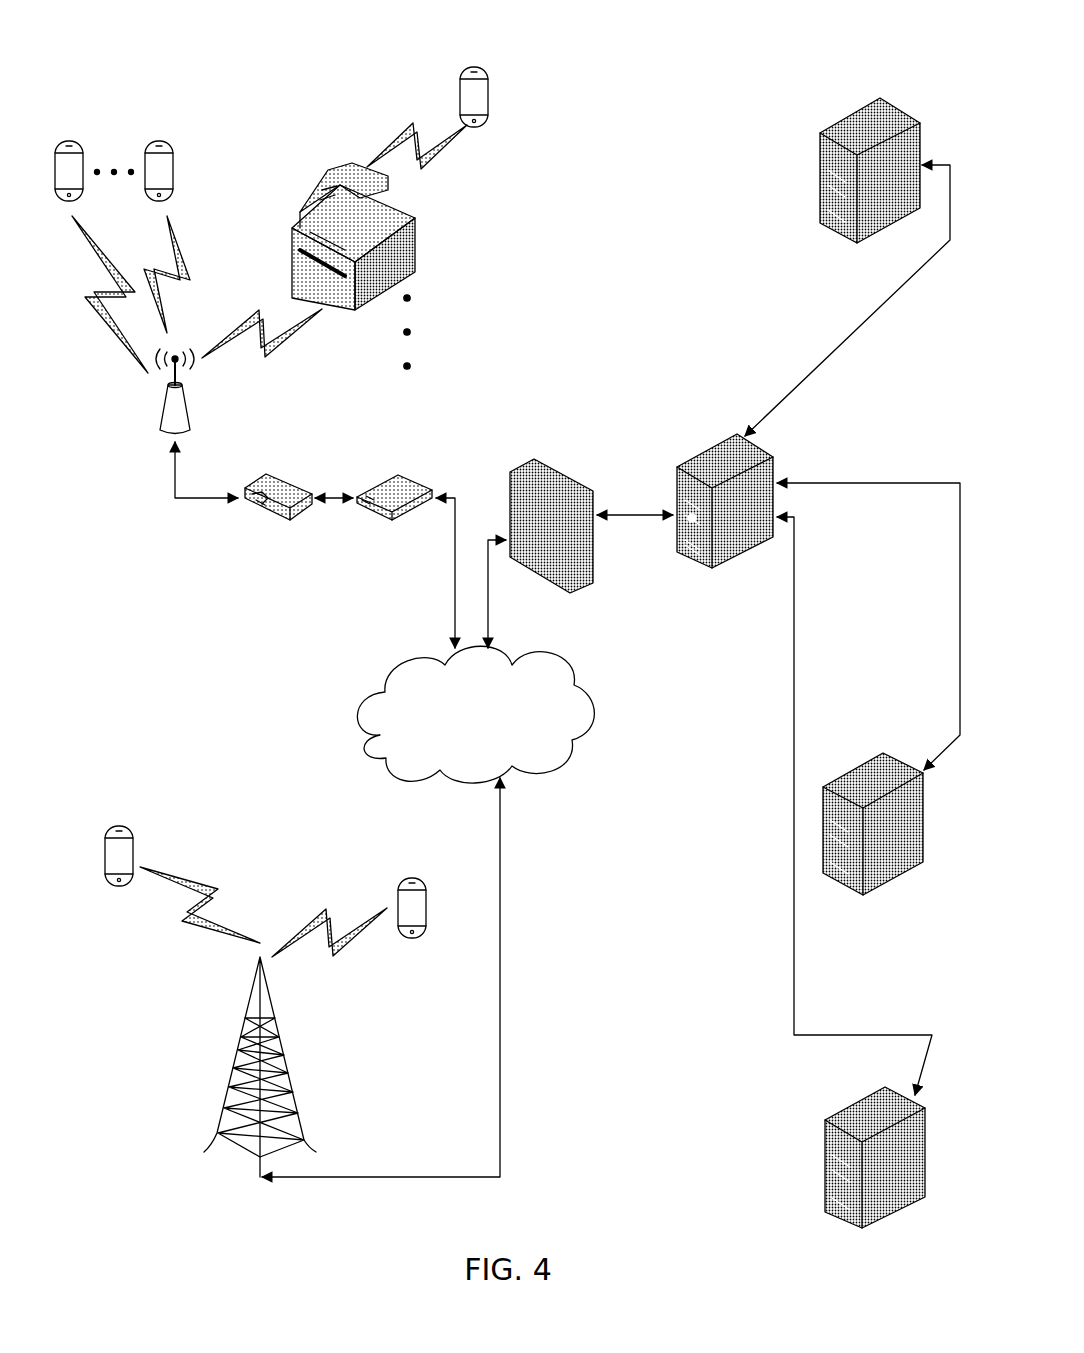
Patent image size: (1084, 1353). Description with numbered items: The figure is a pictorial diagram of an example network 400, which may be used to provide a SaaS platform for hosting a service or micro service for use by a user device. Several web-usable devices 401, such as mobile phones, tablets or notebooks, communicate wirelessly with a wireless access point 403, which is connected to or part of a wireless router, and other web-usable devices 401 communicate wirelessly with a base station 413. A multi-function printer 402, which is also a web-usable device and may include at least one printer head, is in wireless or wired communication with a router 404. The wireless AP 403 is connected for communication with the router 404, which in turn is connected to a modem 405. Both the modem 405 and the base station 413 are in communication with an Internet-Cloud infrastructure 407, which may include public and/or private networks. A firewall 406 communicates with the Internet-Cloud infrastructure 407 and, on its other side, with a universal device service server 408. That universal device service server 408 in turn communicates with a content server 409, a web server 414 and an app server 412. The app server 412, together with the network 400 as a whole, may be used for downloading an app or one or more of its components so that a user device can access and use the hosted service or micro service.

The network 400 is at (186, 52).
The web-usable devices 401 is at (404, 878).
The multi-function printer 402 is at (418, 218).
The wireless access point 403 is at (184, 390).
The router 404 is at (258, 522).
The modem 405 is at (386, 524).
The firewall 406 is at (540, 462).
The Internet-Cloud infrastructure 407 is at (475, 714).
The universal device service server 408 is at (707, 432).
The content server 409 is at (814, 137).
The app server 412 is at (822, 1117).
The base station 413 is at (285, 1076).
The web server 414 is at (878, 750).